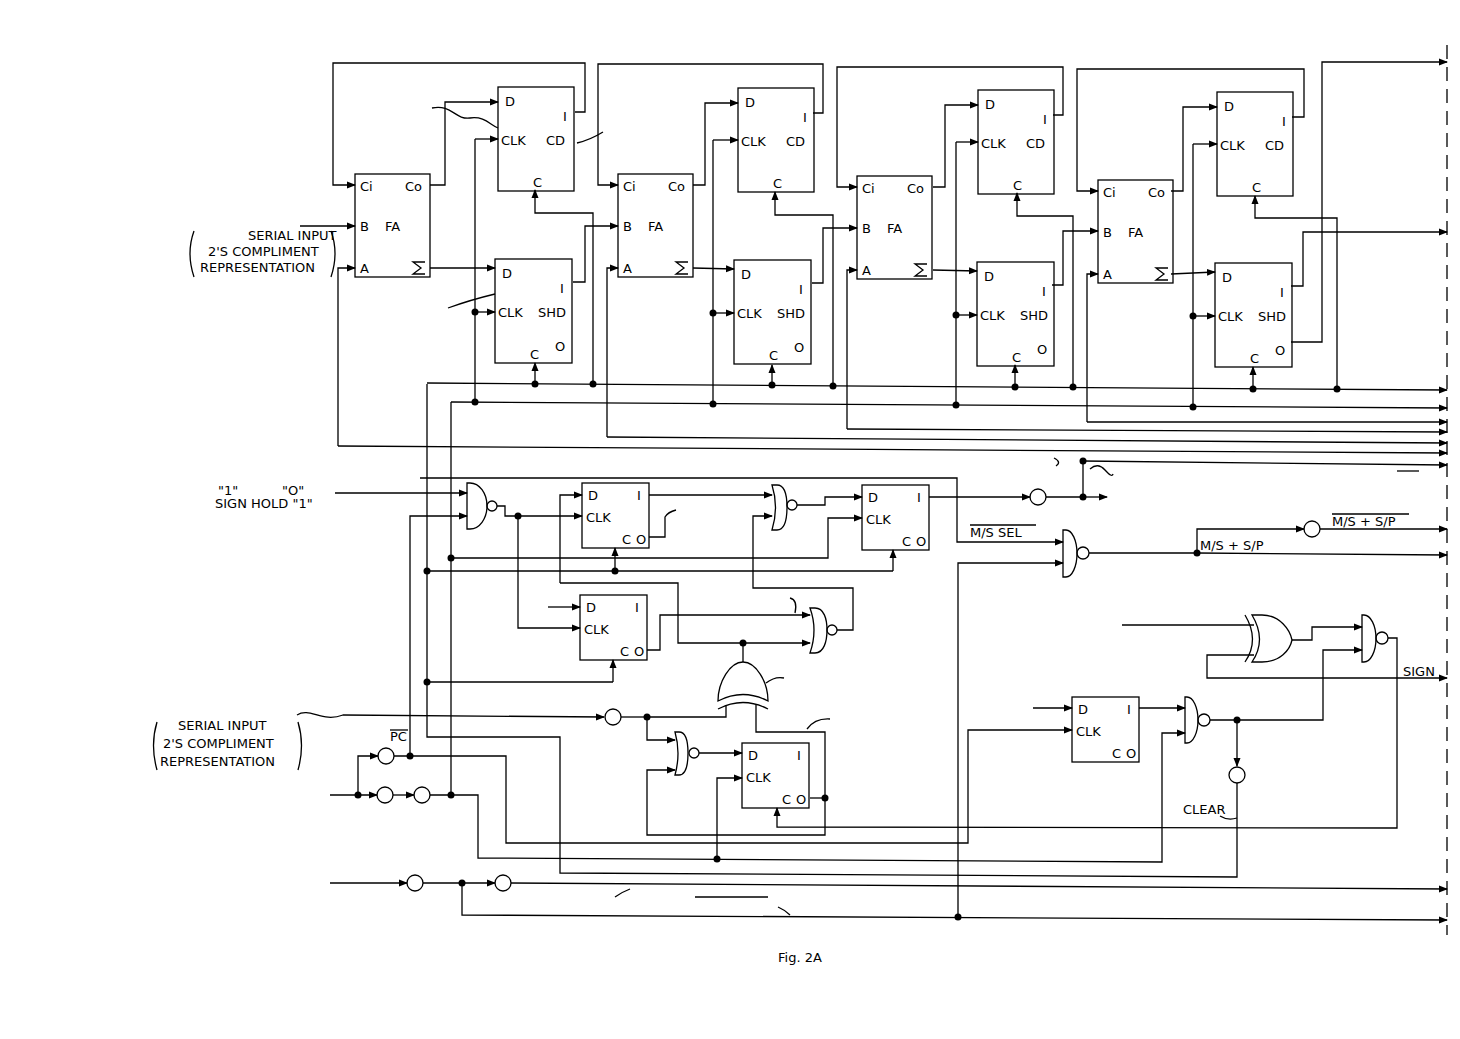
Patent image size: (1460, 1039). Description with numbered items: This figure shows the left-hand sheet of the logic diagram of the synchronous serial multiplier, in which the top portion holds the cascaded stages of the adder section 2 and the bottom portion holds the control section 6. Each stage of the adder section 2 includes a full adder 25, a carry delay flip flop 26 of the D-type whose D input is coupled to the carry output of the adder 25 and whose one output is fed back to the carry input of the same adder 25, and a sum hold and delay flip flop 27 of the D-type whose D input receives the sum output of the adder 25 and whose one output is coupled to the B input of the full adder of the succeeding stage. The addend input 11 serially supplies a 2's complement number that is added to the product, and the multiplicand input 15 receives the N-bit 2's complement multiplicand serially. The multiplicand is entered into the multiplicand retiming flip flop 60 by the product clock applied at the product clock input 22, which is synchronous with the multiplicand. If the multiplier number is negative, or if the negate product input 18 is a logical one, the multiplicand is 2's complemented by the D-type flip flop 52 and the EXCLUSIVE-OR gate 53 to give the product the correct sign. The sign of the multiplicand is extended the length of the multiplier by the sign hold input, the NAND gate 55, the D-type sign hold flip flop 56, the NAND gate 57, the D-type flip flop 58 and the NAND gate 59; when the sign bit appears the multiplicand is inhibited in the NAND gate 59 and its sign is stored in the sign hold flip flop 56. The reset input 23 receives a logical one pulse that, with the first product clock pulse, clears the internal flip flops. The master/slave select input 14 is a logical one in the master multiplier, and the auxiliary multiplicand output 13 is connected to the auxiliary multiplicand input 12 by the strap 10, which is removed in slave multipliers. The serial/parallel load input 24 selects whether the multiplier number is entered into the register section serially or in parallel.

The adder section 2 is at (1158, 61).
The control section 6 is at (376, 629).
The strap 10 is at (1083, 481).
The addend input 11 is at (337, 222).
The auxiliary multiplicand input 12 is at (1206, 477).
The auxiliary multiplicand output 13 is at (1083, 501).
The master/slave select input 14 is at (420, 479).
The multiplicand input 15 is at (345, 716).
The negate product input 18 is at (1218, 628).
The product clock input 22 is at (340, 797).
The reset input 23 is at (1057, 711).
The serial/parallel load input 24 is at (345, 884).
The full adder 25 is at (385, 280).
The carry delay flip flop 26 is at (515, 191).
The sum hold and delay flip flop 27 is at (519, 262).
The D-type flip flop 52 is at (810, 776).
The EXCLUSIVE-OR gate 53 is at (727, 668).
The NAND gate 55 is at (479, 488).
The sign hold flip flop 56 is at (649, 491).
The NAND gate 57 is at (784, 489).
The D-type flip flop 58 is at (580, 639).
The NAND gate 59 is at (824, 612).
The multiplicand retiming flip flop 60 is at (916, 552).